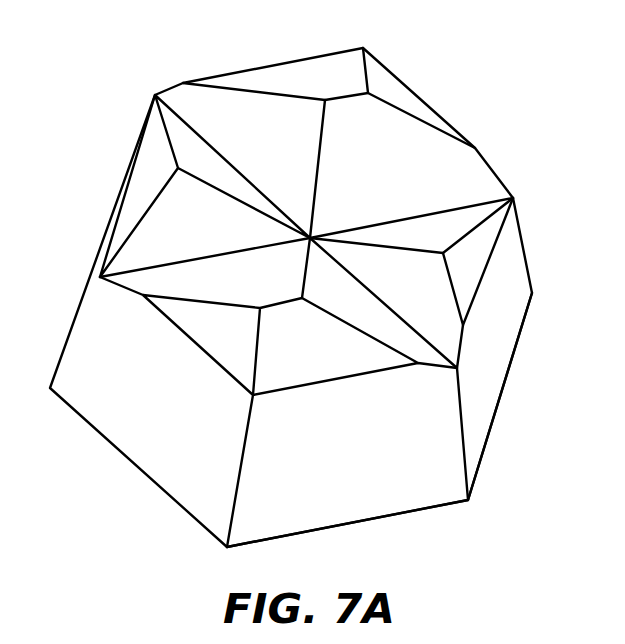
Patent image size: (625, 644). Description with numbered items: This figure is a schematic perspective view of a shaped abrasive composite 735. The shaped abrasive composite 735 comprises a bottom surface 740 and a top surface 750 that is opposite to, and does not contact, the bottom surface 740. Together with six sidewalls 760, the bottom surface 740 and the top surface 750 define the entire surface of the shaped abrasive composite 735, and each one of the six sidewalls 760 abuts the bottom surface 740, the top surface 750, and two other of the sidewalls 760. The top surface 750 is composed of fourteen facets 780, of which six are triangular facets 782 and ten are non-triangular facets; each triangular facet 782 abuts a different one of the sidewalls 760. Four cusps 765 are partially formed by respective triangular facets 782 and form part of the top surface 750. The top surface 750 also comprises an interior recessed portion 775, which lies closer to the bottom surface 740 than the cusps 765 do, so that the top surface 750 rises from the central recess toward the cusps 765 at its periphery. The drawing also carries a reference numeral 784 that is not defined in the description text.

The shaped abrasive composite 735 is at (470, 62).
The bottom surface 740 is at (500, 398).
The top surface 750 is at (453, 183).
The sidewalls 760 is at (508, 328).
The cusps 765 is at (325, 100).
The interior recessed portion 775 is at (310, 238).
The facets 780 is at (258, 78).
The triangular facets 782 is at (472, 263).
The facet 784 is at (488, 211).